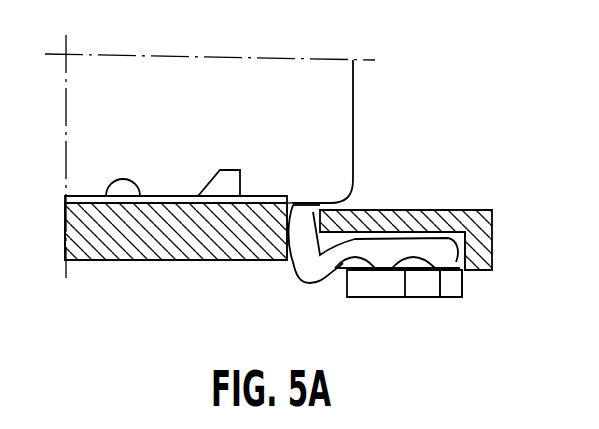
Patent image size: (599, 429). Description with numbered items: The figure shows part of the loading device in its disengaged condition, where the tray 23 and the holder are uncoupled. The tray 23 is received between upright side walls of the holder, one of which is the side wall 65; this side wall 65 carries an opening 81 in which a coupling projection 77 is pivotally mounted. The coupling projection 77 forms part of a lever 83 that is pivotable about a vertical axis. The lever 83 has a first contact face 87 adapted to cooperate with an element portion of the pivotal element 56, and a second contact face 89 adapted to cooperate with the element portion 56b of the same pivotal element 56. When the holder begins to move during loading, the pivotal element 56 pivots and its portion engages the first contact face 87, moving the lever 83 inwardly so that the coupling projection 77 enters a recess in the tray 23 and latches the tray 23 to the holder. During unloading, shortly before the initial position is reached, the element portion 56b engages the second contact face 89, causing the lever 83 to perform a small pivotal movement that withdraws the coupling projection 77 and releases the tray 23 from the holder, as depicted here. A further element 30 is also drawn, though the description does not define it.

The tray 23 is at (297, 100).
The stop projection 30 is at (218, 182).
The side wall 65 is at (150, 240).
The coupling projection 77 is at (296, 204).
The opening 81 is at (316, 203).
The lever 83 is at (393, 248).
The second contact face 89 is at (485, 262).
The first contact face 87 is at (310, 282).
The pivotal element 56 is at (366, 285).
The element portion 56b is at (450, 285).